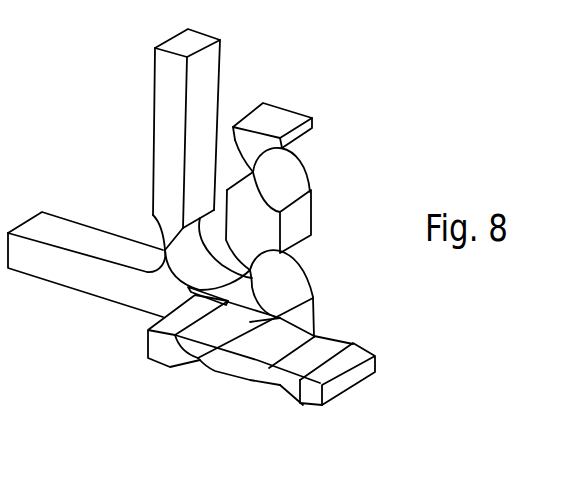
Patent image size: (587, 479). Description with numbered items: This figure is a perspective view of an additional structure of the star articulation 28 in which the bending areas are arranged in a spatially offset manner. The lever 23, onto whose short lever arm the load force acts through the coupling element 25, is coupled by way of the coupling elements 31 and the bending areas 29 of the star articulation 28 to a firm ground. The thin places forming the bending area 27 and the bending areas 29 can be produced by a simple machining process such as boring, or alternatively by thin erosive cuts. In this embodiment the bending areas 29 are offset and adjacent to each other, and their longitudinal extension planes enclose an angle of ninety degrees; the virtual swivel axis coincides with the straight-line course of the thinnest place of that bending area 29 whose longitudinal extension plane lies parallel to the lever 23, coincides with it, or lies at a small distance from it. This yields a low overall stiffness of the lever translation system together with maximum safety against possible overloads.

The lever 23 is at (65, 280).
The coupling element 25 is at (163, 142).
The bending area 27 is at (164, 249).
The star articulation 28 is at (303, 276).
The bending area 29 is at (281, 165).
The coupling element 31 is at (328, 311).